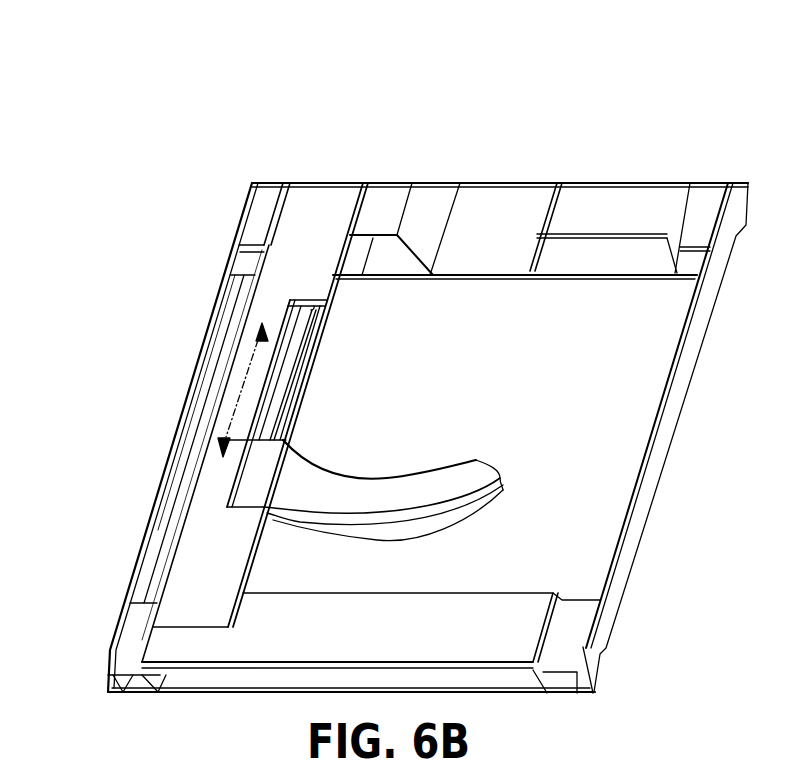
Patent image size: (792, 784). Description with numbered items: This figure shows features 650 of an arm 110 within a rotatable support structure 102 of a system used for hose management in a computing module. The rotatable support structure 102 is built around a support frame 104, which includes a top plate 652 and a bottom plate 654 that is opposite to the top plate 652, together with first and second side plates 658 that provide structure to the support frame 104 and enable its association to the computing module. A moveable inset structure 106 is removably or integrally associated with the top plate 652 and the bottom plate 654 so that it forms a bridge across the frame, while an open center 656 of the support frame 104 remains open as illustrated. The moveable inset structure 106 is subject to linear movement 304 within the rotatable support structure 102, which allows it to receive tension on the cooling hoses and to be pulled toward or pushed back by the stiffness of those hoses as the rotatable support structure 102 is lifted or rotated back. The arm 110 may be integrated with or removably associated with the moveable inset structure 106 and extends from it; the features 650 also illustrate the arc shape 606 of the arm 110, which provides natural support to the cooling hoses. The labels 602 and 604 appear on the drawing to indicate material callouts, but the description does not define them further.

The features 650 is at (648, 96).
The top plate 652 is at (521, 231).
The bottom plate 654 is at (371, 630).
The open center 656 is at (528, 420).
The first and second side plates 658 is at (688, 435).
The support frame 104 is at (213, 690).
The rotatable support structure 102 is at (258, 295).
The moveable inset structure 106 is at (257, 462).
The arm 110 is at (393, 472).
The linear movement 304 is at (247, 390).
The arc shape 606 is at (387, 477).
The metal material 602 is at (27, 60).
The plastic material 604 is at (27, 230).